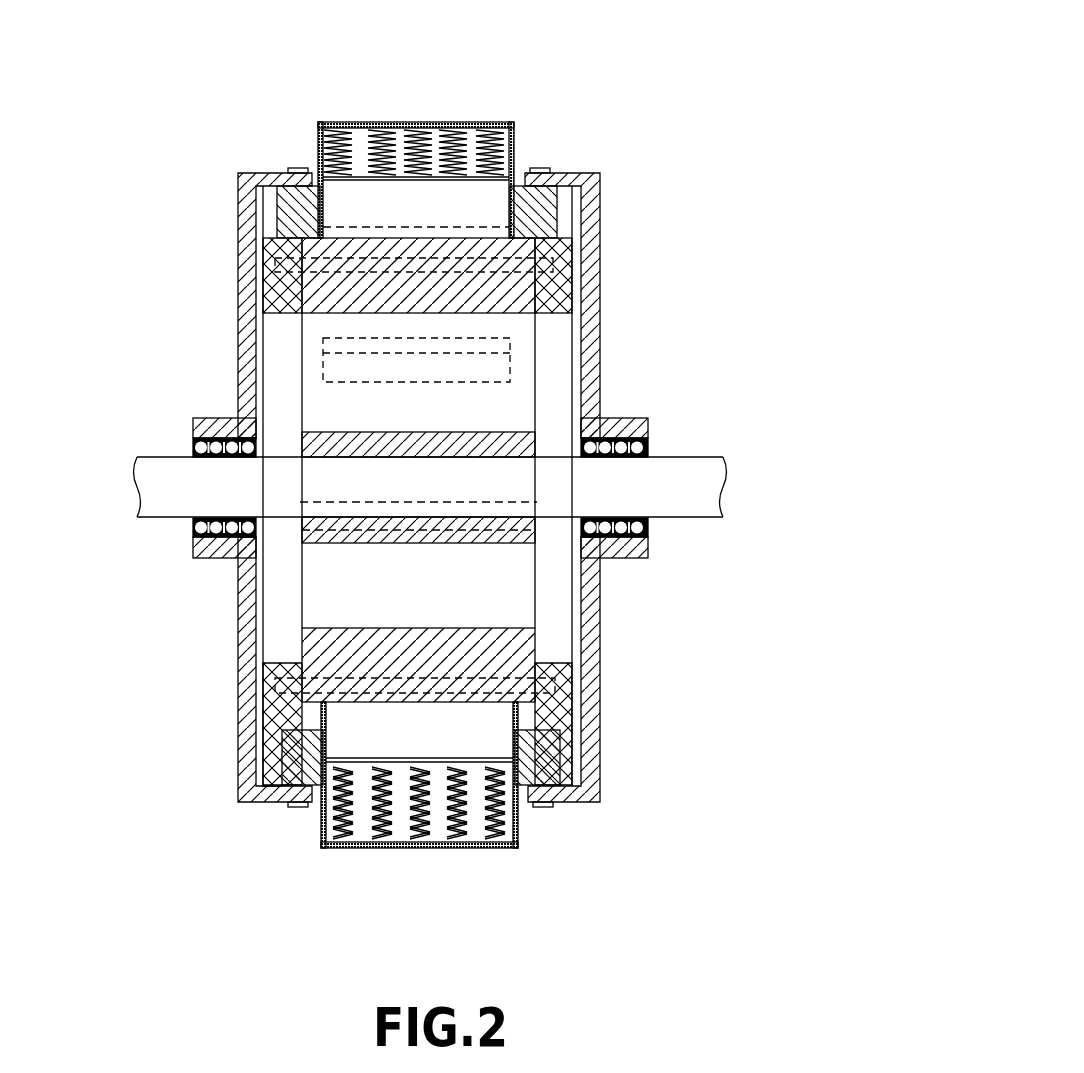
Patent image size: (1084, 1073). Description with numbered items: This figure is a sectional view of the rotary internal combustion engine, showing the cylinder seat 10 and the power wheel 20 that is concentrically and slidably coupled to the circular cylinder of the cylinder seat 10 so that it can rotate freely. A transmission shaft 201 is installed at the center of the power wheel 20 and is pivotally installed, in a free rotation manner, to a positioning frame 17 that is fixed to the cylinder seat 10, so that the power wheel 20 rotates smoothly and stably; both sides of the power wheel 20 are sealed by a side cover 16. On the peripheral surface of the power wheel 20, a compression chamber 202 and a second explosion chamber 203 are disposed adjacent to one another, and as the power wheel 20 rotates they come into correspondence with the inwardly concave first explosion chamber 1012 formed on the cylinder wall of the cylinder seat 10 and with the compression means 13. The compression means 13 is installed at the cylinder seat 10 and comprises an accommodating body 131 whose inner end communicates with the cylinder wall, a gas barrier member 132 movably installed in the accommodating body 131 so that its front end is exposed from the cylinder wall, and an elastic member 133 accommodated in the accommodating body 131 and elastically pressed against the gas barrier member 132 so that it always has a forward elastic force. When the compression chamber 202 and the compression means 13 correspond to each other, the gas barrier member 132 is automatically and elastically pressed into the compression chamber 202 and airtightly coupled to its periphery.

The cylinder seat 10 is at (420, 480).
The compression means 13 is at (484, 480).
The accommodating body 131 is at (470, 122).
The gas barrier member 132 is at (402, 200).
The elastic member 133 is at (503, 47).
The first explosion chamber 1012 is at (473, 230).
The side cover 16 is at (277, 242).
The positioning frame 17 is at (245, 297).
The power wheel 20 is at (480, 511).
The transmission shaft 201 is at (655, 468).
The compression chamber 202 is at (510, 338).
The second explosion chamber 203 is at (560, 374).